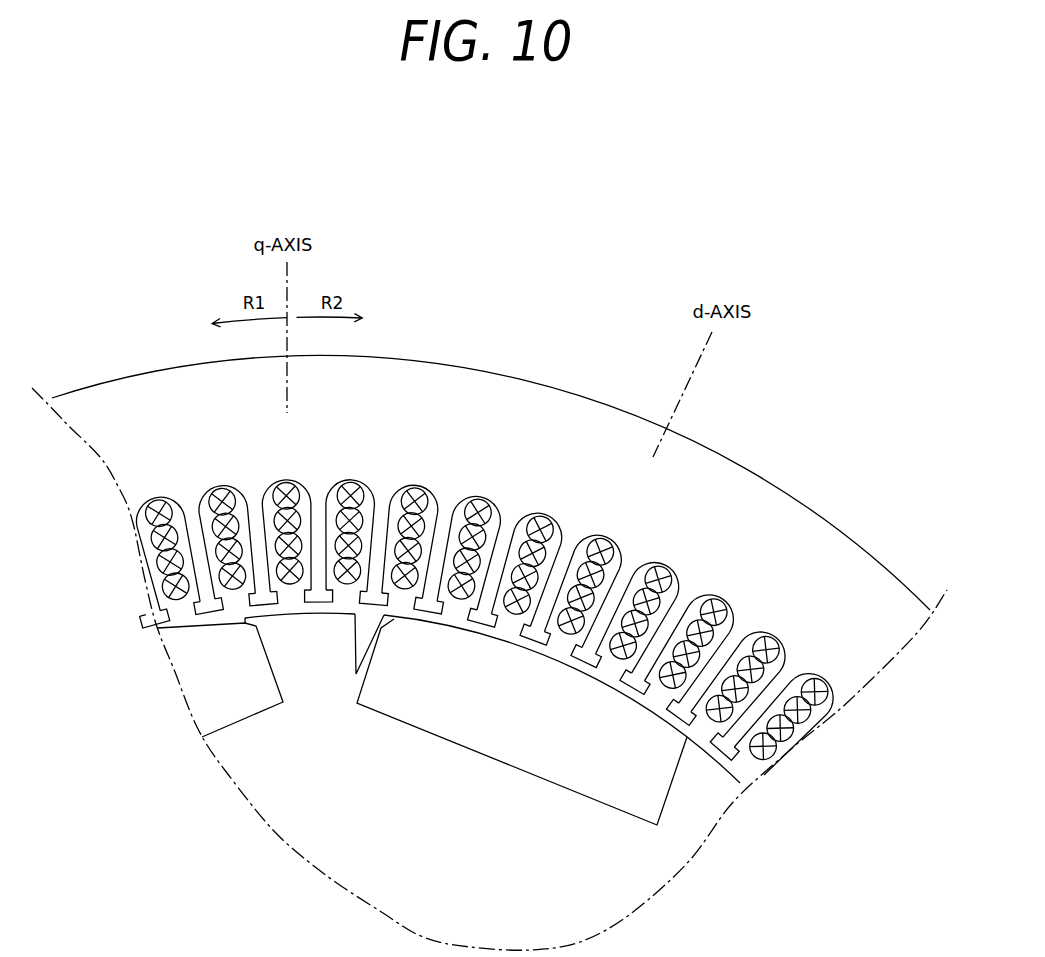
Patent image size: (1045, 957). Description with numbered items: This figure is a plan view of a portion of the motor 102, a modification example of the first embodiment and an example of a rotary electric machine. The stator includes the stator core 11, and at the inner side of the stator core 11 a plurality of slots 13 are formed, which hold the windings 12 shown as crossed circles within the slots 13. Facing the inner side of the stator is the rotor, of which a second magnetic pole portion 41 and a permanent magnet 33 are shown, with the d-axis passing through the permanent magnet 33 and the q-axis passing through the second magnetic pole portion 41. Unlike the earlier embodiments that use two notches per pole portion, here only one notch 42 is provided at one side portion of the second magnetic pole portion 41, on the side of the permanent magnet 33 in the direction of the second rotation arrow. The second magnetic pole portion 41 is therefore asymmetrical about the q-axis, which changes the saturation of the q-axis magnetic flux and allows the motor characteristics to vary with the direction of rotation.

The motor 102 is at (491, 541).
The stator core 11 is at (557, 403).
The windings 12 is at (608, 540).
The slots 13 is at (662, 578).
The notch 42 is at (360, 623).
The second magnetic pole portion 41 is at (313, 645).
The permanent magnet 33 is at (443, 722).